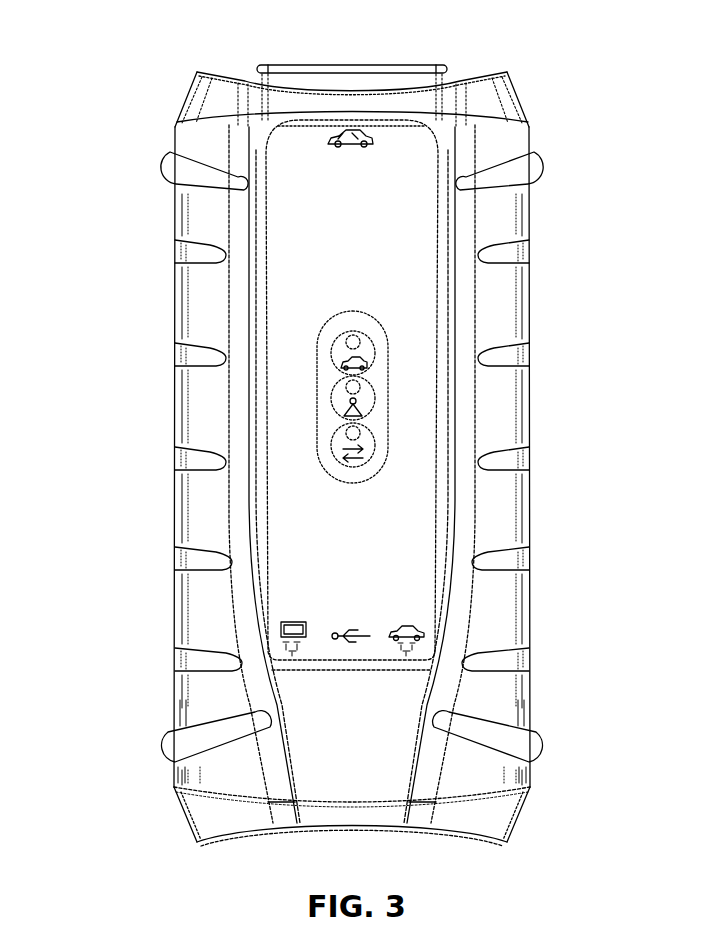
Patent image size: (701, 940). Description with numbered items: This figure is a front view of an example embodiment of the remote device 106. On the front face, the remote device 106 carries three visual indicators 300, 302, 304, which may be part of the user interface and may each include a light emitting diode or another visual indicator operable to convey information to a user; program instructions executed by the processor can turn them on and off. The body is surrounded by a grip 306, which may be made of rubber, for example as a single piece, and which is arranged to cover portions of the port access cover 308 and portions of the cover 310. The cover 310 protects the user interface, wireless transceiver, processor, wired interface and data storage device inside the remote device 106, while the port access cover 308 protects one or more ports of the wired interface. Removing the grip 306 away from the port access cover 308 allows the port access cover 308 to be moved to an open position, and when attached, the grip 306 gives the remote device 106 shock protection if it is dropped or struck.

The remote device 106 is at (116, 26).
The visual indicator 300 is at (355, 342).
The visual indicator 302 is at (355, 387).
The visual indicator 304 is at (355, 433).
The grip 306 is at (197, 298).
The port access cover 308 is at (356, 783).
The cover 310 is at (331, 192).